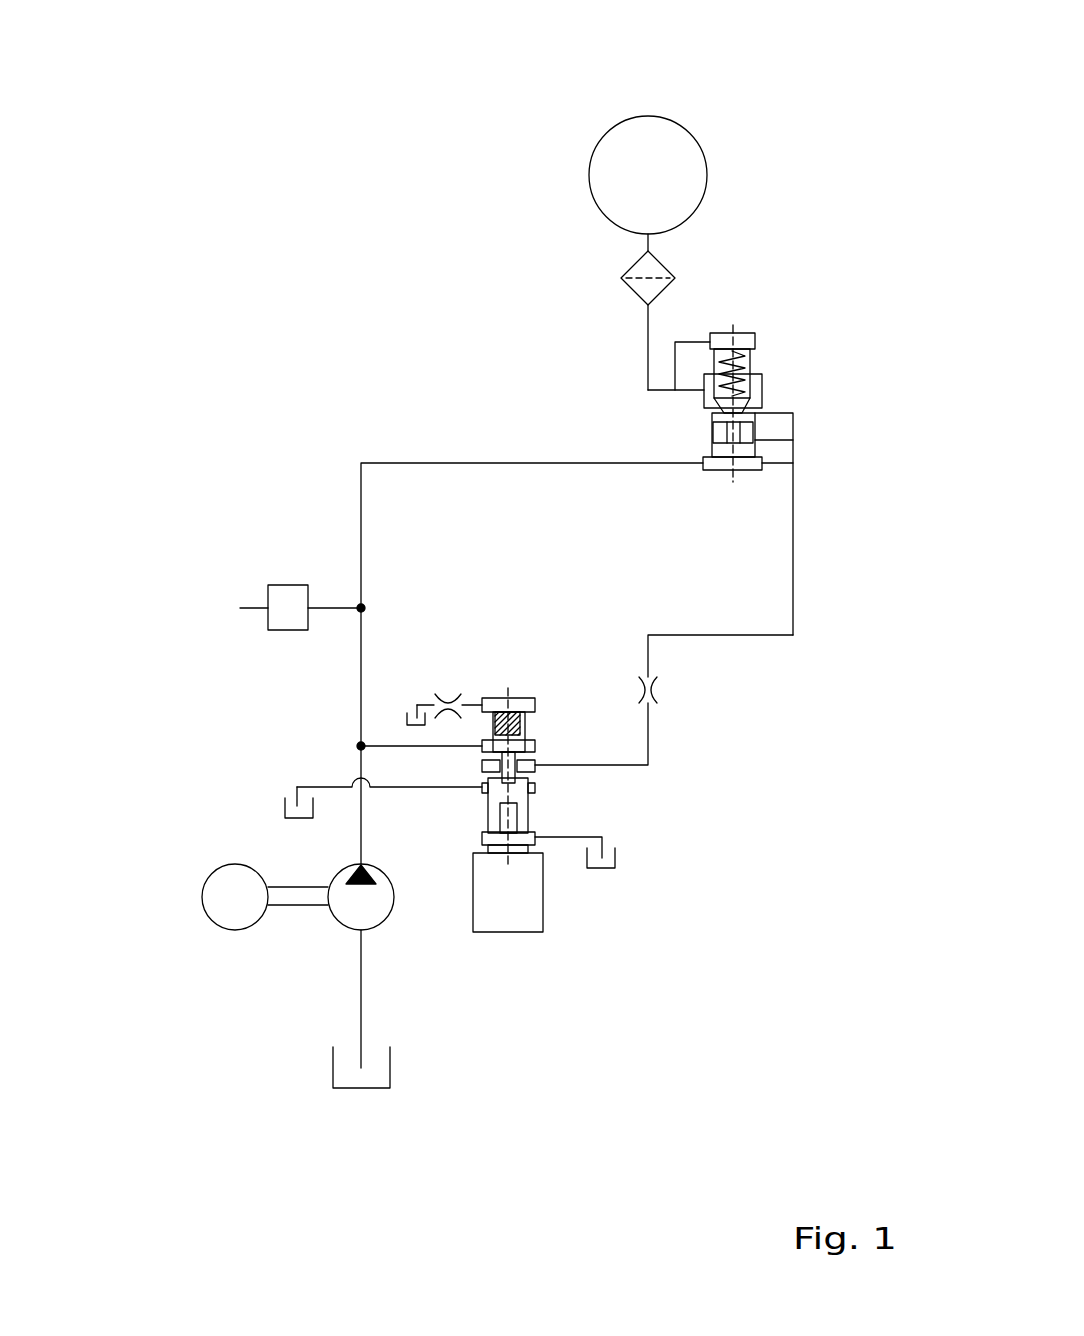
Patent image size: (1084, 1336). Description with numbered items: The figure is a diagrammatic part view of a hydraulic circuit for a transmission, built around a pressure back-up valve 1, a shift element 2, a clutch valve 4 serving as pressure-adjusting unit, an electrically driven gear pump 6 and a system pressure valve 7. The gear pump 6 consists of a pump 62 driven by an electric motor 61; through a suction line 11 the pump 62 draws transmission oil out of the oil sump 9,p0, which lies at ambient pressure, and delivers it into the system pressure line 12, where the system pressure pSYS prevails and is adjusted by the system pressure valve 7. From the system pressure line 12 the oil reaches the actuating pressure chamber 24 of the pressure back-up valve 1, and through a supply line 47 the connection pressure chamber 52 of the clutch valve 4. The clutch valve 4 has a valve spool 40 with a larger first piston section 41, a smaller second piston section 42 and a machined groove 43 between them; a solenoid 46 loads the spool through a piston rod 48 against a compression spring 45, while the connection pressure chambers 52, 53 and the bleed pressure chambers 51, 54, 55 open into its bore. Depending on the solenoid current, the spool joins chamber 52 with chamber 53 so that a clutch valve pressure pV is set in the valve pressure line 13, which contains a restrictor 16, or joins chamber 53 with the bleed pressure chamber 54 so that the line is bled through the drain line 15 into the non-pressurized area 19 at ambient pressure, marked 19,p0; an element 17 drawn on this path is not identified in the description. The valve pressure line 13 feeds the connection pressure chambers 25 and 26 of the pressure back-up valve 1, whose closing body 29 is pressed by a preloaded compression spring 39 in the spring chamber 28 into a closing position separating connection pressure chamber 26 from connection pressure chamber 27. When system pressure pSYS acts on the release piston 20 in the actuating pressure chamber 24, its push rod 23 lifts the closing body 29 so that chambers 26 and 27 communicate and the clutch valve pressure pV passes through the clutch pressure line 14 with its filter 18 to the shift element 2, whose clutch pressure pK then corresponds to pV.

The pressure back-up valve 1 is at (805, 266).
The shift element 2 is at (648, 121).
The clutch valve 4 is at (547, 1069).
The electrically driven gear pump 6 is at (158, 955).
The system pressure valve 7 is at (234, 589).
The oil sump 9,p0 is at (357, 1126).
The suction line 11 is at (306, 1067).
The system pressure line 12 is at (550, 436).
The valve pressure line 13 is at (778, 612).
The clutch pressure line 14 is at (596, 199).
The drain line 15 is at (286, 755).
The restrictor 16 is at (721, 685).
The throttle 17 is at (284, 574).
The filter 18 is at (608, 156).
The non-pressurized area 19 is at (258, 653).
The non-pressurized area 19,p0 is at (769, 918).
The release piston 20 is at (543, 231).
The push rod 23 is at (570, 219).
The actuating pressure chamber 24 is at (805, 491).
The connection pressure chamber 25 is at (810, 409).
The connection pressure chamber 26 is at (810, 386).
The connection pressure chamber 27 is at (811, 335).
The spring chamber 28 is at (733, 208).
The closing body 29 is at (811, 299).
The compression spring 39 is at (809, 246).
The valve spool 40 is at (721, 934).
The first piston section 41 is at (719, 864).
The second piston section 42 is at (393, 380).
The machined groove 43 is at (285, 686).
The compression spring 45 is at (701, 734).
The solenoid 46 is at (508, 1029).
The supply line 47 is at (286, 714).
The piston rod 48 is at (480, 1018).
The bleed pressure chamber 51 is at (695, 695).
The connection pressure chamber 52 is at (695, 783).
The connection pressure chamber 53 is at (695, 825).
The bleed pressure chamber 54 is at (285, 831).
The bleed pressure chamber 55 is at (588, 1025).
The electric motor 61 is at (209, 897).
The pump 62 is at (242, 955).
The clutch pressure pK is at (618, 75).
The clutch valve pressure pV is at (832, 524).
The system pressure pSYS is at (205, 426).